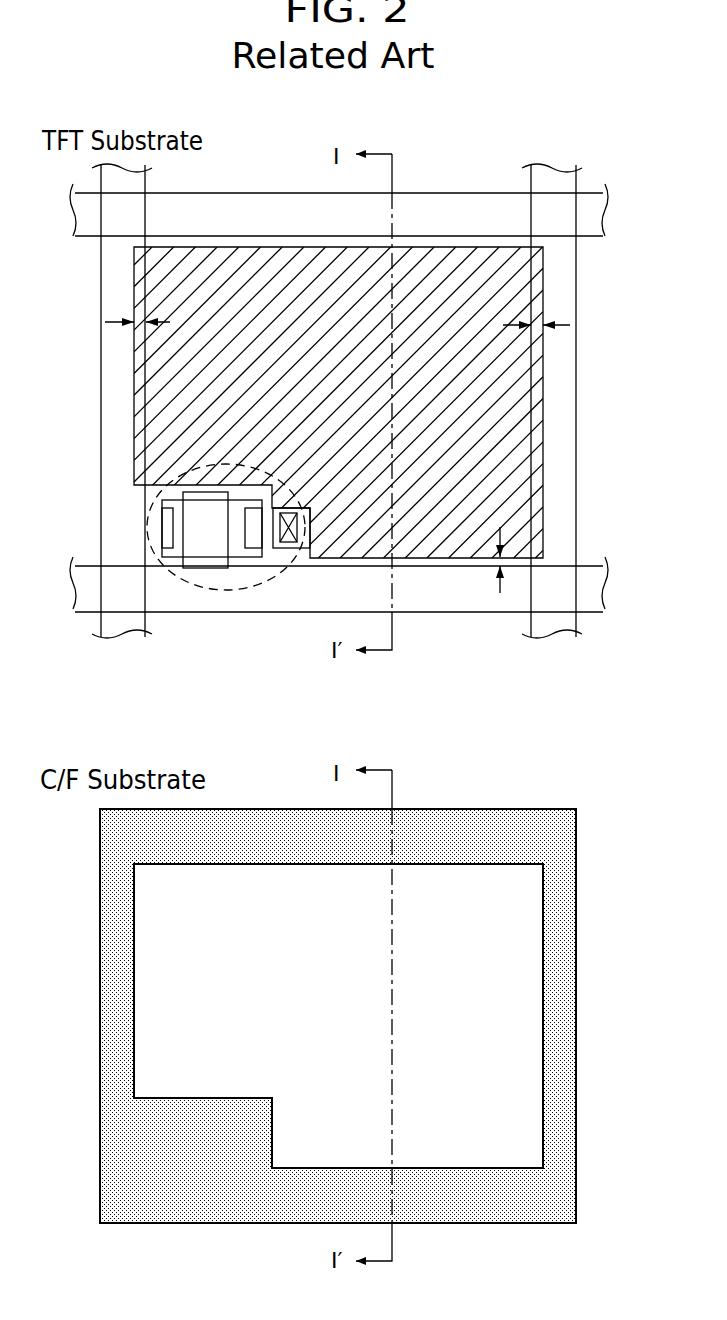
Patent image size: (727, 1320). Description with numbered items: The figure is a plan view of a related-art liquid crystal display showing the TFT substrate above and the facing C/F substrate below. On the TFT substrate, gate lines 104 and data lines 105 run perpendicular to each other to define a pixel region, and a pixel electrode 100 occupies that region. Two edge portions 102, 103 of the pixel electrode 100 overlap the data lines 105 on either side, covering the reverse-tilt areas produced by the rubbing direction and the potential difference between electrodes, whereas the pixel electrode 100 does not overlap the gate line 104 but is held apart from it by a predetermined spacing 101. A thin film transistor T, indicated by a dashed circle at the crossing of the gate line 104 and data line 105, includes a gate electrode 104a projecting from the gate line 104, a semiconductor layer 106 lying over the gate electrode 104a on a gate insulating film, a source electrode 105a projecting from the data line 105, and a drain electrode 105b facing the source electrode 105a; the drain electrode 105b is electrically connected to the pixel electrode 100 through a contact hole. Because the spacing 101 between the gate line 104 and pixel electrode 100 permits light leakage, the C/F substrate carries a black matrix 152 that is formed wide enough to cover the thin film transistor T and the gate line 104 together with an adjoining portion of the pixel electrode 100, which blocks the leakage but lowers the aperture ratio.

The pixel electrode 100 is at (506, 393).
The spacing 101 is at (499, 560).
The portion of the pixel electrode overlapping the data line 102 is at (138, 318).
The portion of the pixel electrode overlapping the data line 103 is at (541, 323).
The gate line 104 is at (409, 598).
The gate electrode 104a is at (200, 563).
The data line 105 is at (106, 378).
The source electrode 105a is at (152, 527).
The drain electrode 105b is at (268, 535).
The semiconductor layer 106 is at (237, 547).
The thin film transistor T is at (180, 470).
The black matrix 152 is at (571, 995).